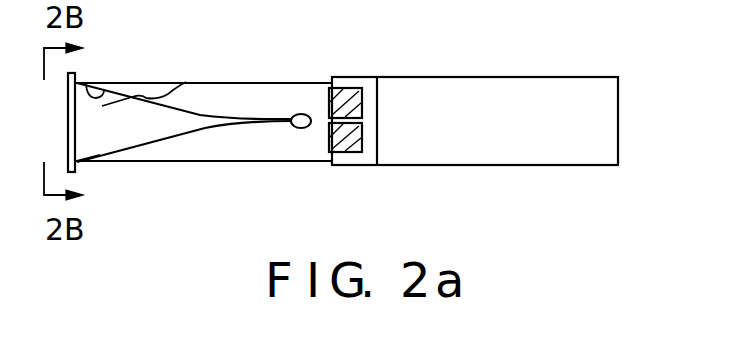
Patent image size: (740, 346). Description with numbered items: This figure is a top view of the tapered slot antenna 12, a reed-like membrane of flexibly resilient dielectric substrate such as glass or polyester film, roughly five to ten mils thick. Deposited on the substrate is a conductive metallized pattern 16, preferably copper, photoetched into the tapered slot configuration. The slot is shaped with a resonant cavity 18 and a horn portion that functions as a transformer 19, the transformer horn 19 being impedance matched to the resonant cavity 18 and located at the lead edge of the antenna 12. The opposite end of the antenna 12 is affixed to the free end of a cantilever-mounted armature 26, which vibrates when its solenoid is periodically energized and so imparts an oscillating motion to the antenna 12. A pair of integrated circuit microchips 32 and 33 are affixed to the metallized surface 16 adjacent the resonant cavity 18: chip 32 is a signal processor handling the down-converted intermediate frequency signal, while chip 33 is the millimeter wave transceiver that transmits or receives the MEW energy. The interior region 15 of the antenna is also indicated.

The tapered slot antenna 12 is at (232, 82).
The interior cavity 15 is at (92, 137).
The conductive metallized pattern 16 is at (267, 140).
The resonant cavity 18 is at (312, 115).
The transformer horn 19 is at (110, 92).
The armature 26 is at (543, 77).
The integrated circuit microchip 32 is at (353, 95).
The integrated circuit microchip 33 is at (347, 138).